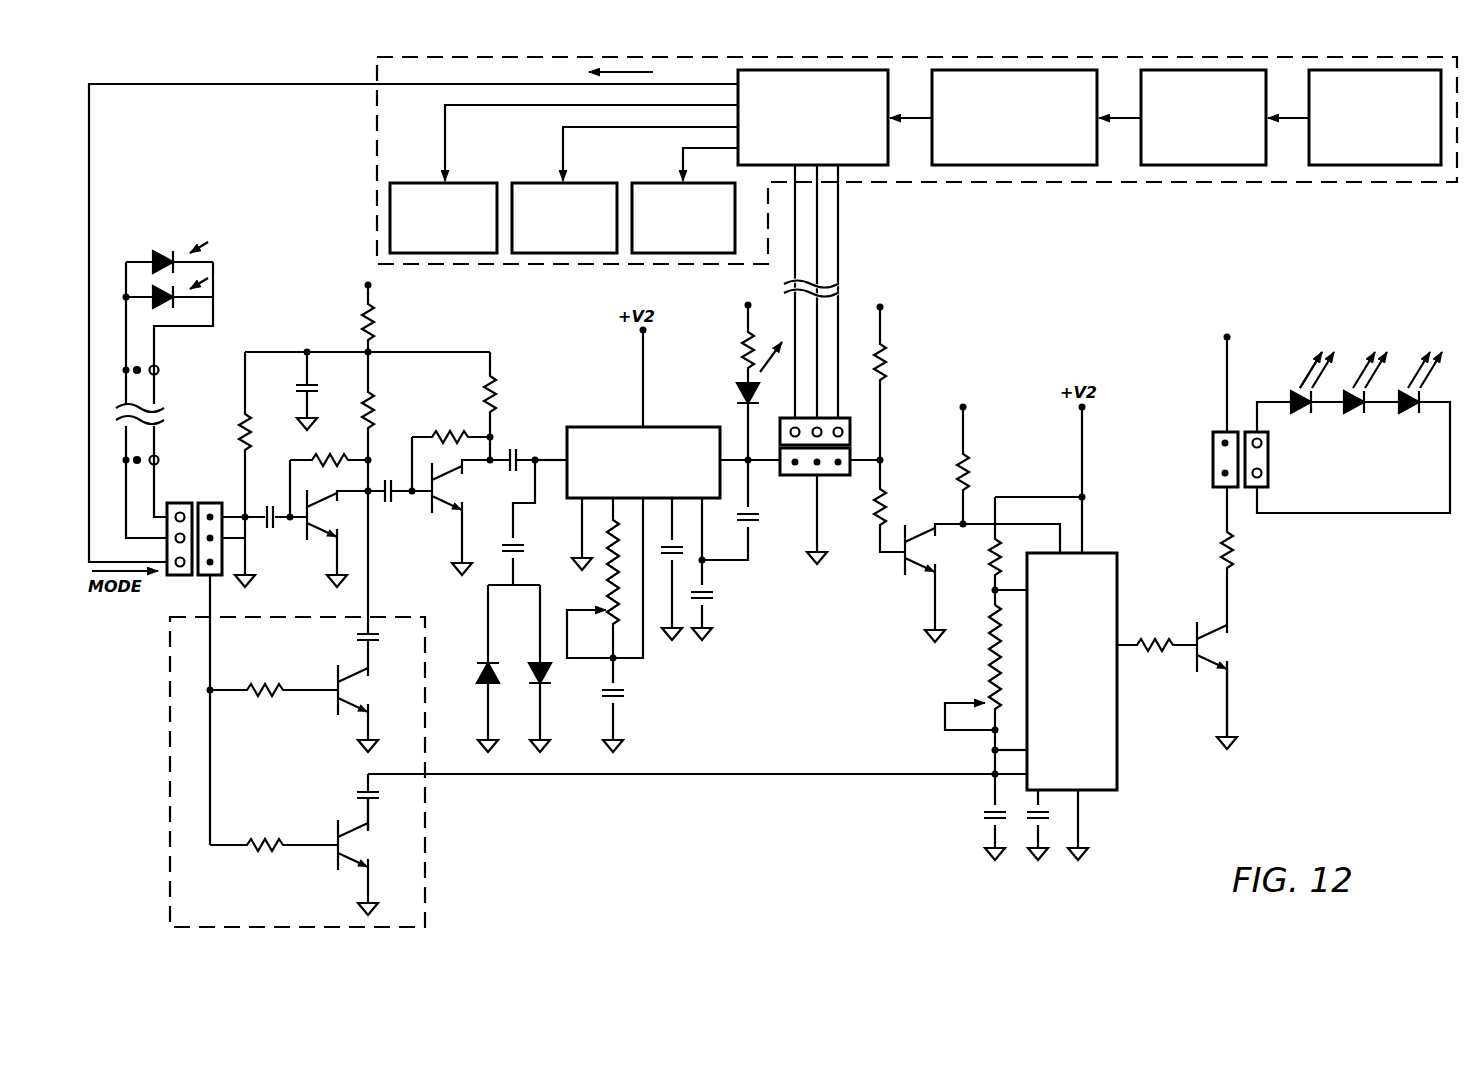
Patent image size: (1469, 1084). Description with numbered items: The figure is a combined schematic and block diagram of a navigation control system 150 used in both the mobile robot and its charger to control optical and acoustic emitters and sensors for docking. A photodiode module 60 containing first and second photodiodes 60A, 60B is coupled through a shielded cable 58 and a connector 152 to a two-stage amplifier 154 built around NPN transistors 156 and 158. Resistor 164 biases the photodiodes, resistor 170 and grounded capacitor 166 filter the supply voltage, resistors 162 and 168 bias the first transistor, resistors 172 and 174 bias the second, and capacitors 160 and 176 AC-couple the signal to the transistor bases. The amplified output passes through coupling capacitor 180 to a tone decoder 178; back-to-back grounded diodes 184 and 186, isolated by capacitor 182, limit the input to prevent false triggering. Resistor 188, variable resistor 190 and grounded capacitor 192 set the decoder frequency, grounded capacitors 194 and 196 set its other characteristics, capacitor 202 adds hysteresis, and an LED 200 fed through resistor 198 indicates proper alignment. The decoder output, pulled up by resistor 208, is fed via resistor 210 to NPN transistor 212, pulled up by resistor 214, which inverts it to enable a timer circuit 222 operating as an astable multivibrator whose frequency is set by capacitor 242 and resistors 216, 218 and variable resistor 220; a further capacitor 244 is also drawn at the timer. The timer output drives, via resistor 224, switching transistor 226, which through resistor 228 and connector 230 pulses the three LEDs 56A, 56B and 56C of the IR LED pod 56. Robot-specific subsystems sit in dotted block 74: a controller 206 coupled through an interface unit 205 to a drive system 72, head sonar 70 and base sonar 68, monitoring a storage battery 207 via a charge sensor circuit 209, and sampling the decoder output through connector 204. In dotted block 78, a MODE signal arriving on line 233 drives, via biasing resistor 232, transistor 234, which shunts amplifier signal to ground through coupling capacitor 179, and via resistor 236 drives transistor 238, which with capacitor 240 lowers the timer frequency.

The line 233 is at (300, 86).
The photodiode module 60 is at (155, 283).
The first photodiode 60A is at (155, 253).
The second photodiode 60B is at (148, 306).
The shielded cable 58 is at (118, 378).
The connector 152 is at (176, 588).
The resistor 164 is at (238, 444).
The grounded capacitor 166 is at (302, 386).
The resistor 162 is at (332, 456).
The capacitor 160 is at (290, 541).
The first NPN transistor 156 is at (330, 551).
The two-stage amplifier 154 is at (447, 374).
The resistor 168 is at (372, 425).
The resistor 170 is at (363, 324).
The capacitor 176 is at (376, 505).
The second NPN transistor 158 is at (440, 527).
The resistor 172 is at (432, 432).
The resistor 174 is at (498, 372).
The coupling capacitor 180 is at (512, 442).
The capacitor 182 is at (548, 544).
The resistor 188 is at (604, 572).
The variable resistor 190 is at (605, 578).
The diode 184 is at (485, 686).
The diode 186 is at (554, 682).
The grounded capacitor 192 is at (625, 695).
The grounded capacitor 194 is at (672, 607).
The grounded capacitor 196 is at (716, 598).
The tone decoder 178 is at (709, 453).
The resistor 198 is at (740, 348).
The LED 200 is at (736, 394).
The capacitor 202 is at (752, 518).
The connector 204 is at (822, 476).
The resistor 208 is at (887, 363).
The resistor 210 is at (886, 508).
The NPN switching transistor 212 is at (897, 564).
The resistor 214 is at (960, 471).
The resistor 216 is at (990, 565).
The resistor 218 is at (990, 635).
The variable resistor 220 is at (974, 697).
The timer circuit 222 is at (1085, 632).
The capacitor 242 is at (985, 816).
The capacitor 244 is at (1045, 826).
The resistor 224 is at (1152, 641).
The NPN switching transistor 226 is at (1216, 649).
The resistor 228 is at (1236, 549).
The connector 230 is at (1240, 420).
The IR LED pod 56 is at (1353, 399).
The LED 56A is at (1302, 413).
The LED 56B is at (1354, 415).
The LED 56C is at (1393, 414).
The navigation control system 150 is at (1290, 700).
The coupling capacitor 179 is at (352, 643).
The NPN transistor 234 is at (348, 693).
The biasing resistor 232 is at (284, 693).
The capacitor 240 is at (352, 797).
The resistor 236 is at (266, 848).
The NPN transistor 238 is at (332, 855).
The block 78 is at (327, 751).
The robot drive system 72 is at (468, 182).
The head sonar 70 is at (588, 182).
The base sonar 68 is at (652, 182).
The interface unit 205 is at (858, 154).
The controller 206 is at (1032, 149).
The charge sensor circuit 209 is at (1197, 165).
The storage battery 207 is at (1322, 165).
The block 74 is at (1372, 184).